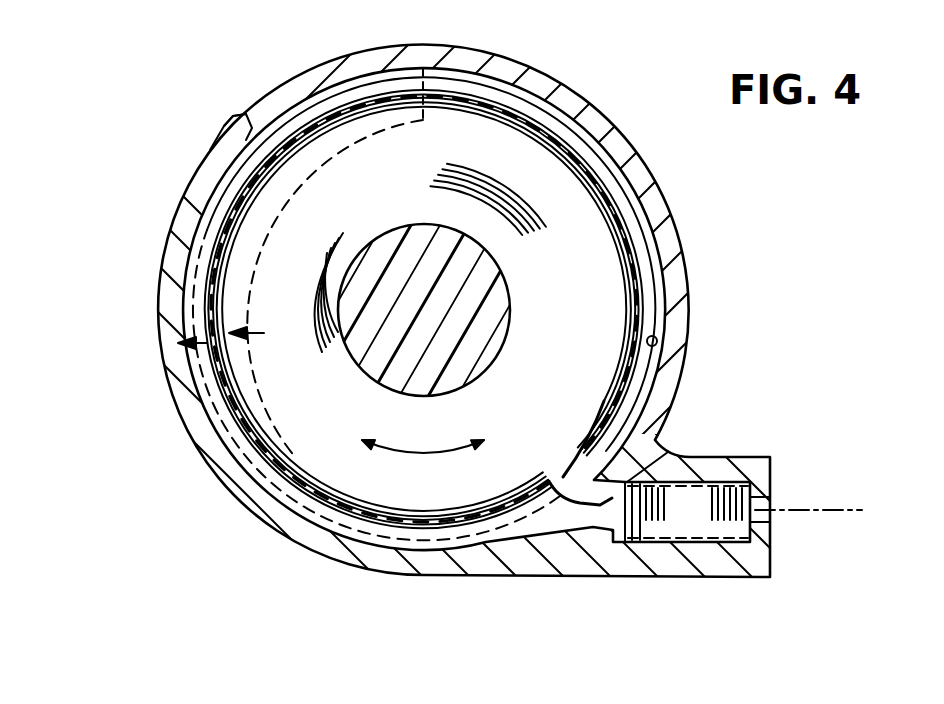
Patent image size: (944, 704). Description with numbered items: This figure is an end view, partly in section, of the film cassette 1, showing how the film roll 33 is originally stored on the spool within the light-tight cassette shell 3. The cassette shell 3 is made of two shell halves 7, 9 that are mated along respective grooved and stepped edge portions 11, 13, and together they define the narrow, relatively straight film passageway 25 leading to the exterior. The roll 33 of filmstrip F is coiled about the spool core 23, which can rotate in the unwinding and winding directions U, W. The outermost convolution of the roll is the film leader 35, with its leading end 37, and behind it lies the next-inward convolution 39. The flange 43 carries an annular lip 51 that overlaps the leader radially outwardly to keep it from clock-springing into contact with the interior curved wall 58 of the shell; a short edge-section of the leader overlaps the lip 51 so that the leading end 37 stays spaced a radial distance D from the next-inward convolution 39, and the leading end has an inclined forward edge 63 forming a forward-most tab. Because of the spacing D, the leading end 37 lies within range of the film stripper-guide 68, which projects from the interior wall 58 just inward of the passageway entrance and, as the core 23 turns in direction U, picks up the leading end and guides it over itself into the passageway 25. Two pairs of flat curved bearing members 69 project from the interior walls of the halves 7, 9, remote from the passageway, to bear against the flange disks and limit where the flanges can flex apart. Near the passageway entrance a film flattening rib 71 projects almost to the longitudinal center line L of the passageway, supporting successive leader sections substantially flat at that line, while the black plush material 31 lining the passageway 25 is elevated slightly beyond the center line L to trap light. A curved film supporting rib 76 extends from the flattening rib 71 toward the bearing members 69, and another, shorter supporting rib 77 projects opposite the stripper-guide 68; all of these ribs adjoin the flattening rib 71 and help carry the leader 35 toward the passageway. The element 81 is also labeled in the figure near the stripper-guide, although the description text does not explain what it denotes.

The film cassette 1 is at (189, 105).
The cassette shell 3 is at (270, 80).
The shell half 7 is at (566, 86).
The shell half 9 is at (176, 410).
The grooved edge portion 11 is at (225, 148).
The stepped edge portion 13 is at (245, 118).
The spool core 23 is at (488, 302).
The film passageway 25 is at (693, 528).
The plush material 31 is at (690, 490).
The film roll 33 is at (598, 146).
The film leader 35 is at (222, 215).
The leading end 37 is at (210, 237).
The next-inward convolution 39 is at (312, 122).
The flange 43 is at (666, 299).
The annular lip 51 is at (642, 262).
The interior curved wall 58 is at (660, 342).
The forward edge 63 is at (205, 296).
The film stripper-guide 68 is at (560, 482).
The bearing members 69 is at (352, 130).
The film flattening rib 71 is at (605, 548).
The film supporting rib 76 is at (332, 500).
The film supporting rib 77 is at (524, 562).
The spring tongue 81 is at (572, 458).
The radial distance D is at (178, 343).
The filmstrip F is at (640, 201).
The longitudinal center line L is at (858, 508).
The winding direction W is at (365, 438).
The unwinding direction U is at (485, 438).